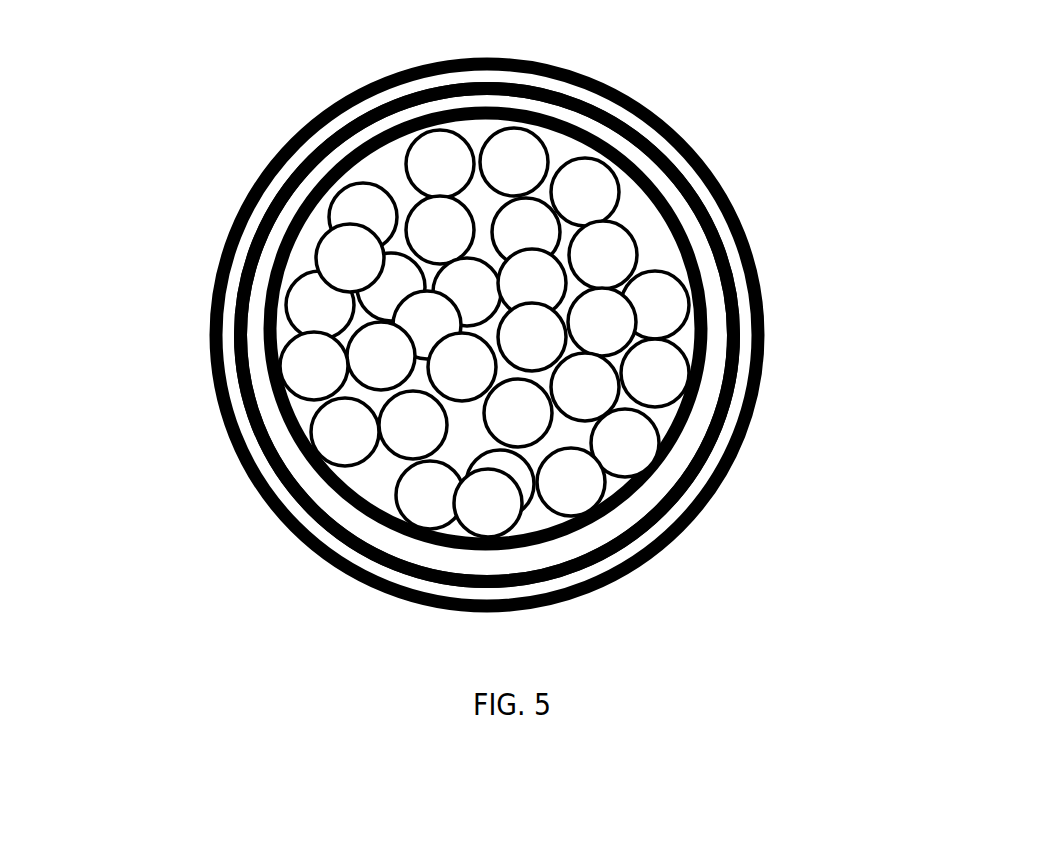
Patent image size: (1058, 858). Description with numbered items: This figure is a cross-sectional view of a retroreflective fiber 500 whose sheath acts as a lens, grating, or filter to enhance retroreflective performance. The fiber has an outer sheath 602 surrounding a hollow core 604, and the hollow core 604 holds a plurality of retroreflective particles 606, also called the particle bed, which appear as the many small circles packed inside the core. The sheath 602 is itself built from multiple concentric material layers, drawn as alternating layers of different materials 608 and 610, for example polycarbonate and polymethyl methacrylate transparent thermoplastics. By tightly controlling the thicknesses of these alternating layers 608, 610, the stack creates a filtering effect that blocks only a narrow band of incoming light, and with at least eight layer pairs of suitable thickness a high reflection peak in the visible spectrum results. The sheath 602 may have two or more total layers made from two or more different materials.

The retroreflective fiber 500 is at (206, 131).
The sheath 602 is at (647, 533).
The hollow core 604 is at (688, 235).
The retroreflective particles 606 is at (428, 488).
The layer of first material 608 is at (700, 398).
The layer of second material 610 is at (428, 588).